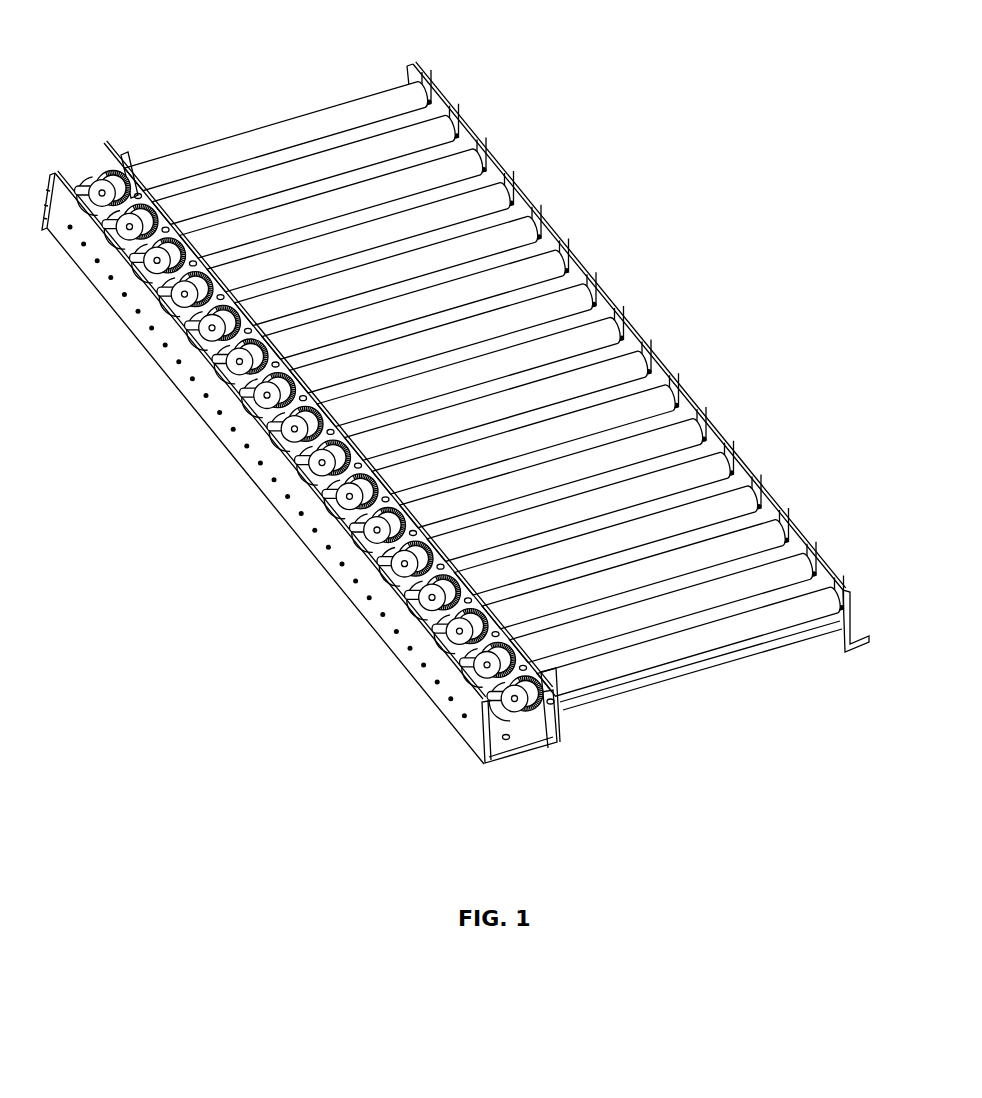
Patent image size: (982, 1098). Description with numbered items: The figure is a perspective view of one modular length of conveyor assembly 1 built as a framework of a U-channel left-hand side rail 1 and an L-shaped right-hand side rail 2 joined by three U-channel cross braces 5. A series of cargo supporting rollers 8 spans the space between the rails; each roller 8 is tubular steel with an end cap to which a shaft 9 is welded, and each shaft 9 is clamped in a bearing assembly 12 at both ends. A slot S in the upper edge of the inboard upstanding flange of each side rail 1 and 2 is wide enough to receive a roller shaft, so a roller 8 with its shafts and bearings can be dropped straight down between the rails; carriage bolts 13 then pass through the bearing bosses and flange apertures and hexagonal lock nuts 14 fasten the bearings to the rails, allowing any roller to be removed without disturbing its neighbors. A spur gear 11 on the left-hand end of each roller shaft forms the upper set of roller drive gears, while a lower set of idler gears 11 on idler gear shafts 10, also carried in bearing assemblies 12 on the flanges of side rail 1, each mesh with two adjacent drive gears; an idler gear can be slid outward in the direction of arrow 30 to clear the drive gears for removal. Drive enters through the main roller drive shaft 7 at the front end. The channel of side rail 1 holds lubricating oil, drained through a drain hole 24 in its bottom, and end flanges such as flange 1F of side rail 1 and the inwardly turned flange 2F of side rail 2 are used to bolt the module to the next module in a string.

The left-hand side rail 1 is at (275, 536).
The first side frame 1F is at (507, 760).
The right-hand side rail 2 is at (606, 262).
The inwardly turned flange 2F is at (413, 64).
The U-channel cross brace 5 is at (670, 678).
The main roller drive shaft 7 is at (480, 710).
The cargo supporting roller 8 is at (323, 110).
The shaft 9 is at (430, 600).
The idler gear shaft 10 is at (437, 630).
The spur gear 11 is at (533, 715).
The bearing assembly 12 is at (293, 431).
The carriage bolt 13 is at (343, 492).
The hexagonal lock nut 14 is at (137, 313).
The drain hole 24 is at (488, 762).
The arrow 30 is at (166, 533).
The slot S is at (533, 220).